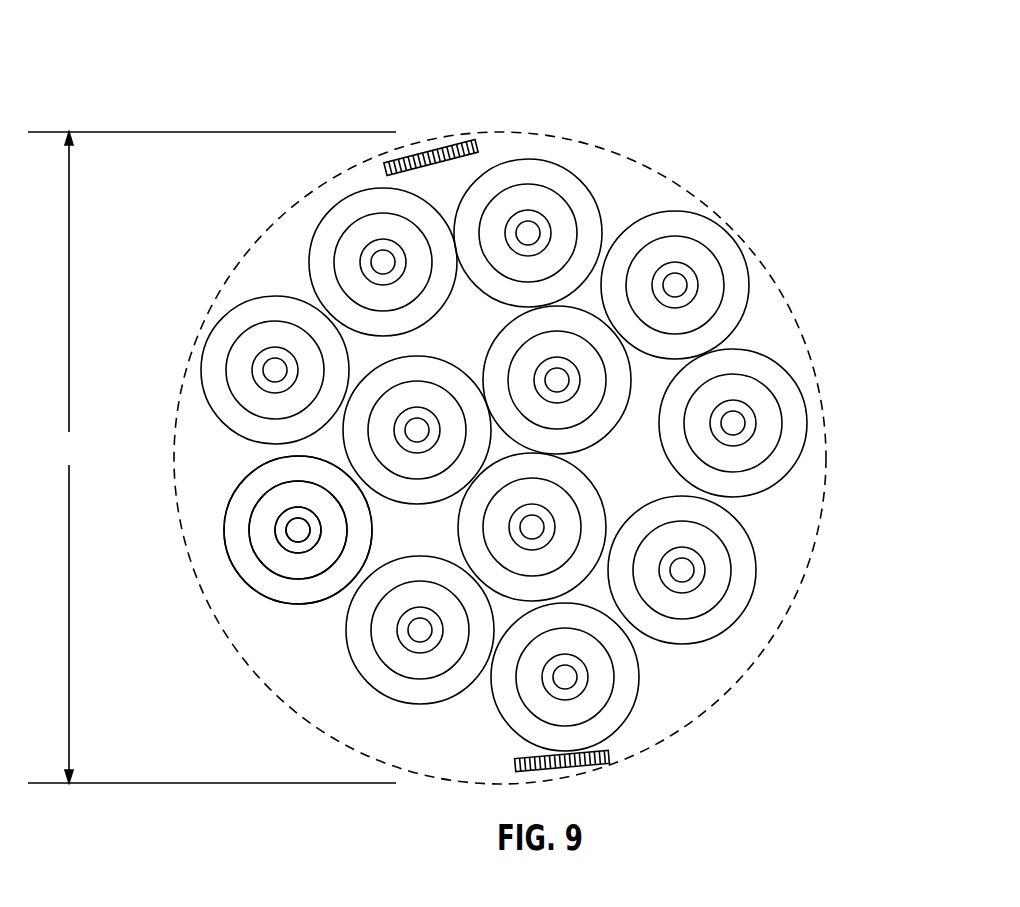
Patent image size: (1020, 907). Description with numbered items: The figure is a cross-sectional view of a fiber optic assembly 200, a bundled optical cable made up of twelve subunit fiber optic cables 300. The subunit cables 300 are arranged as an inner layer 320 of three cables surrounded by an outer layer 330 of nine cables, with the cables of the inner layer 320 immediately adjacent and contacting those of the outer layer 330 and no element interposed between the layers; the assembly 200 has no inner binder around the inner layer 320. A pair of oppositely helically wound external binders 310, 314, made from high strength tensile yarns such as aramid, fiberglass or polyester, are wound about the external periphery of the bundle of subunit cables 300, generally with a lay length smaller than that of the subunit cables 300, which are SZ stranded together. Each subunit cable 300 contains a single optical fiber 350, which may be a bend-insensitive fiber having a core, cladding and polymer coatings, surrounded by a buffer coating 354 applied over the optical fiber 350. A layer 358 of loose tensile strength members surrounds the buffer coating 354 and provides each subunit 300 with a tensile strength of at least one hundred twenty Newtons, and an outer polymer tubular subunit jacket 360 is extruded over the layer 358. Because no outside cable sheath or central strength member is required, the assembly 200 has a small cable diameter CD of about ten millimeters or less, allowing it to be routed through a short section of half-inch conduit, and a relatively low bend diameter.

The fiber optic assembly 200 is at (320, 120).
The subunit fiber optic cable 300 is at (557, 500).
The outer binder 310 is at (443, 145).
The outer binder 314 is at (577, 767).
The inner layer 320 is at (640, 490).
The outer layer 330 is at (588, 127).
The optical fiber 350 is at (297, 530).
The buffer coating 354 is at (310, 543).
The layer of loose tensile strength members 358 is at (252, 528).
The subunit jacket 360 is at (240, 490).
The cross-sectional area A is at (673, 177).
The cable diameter CD is at (212, 457).